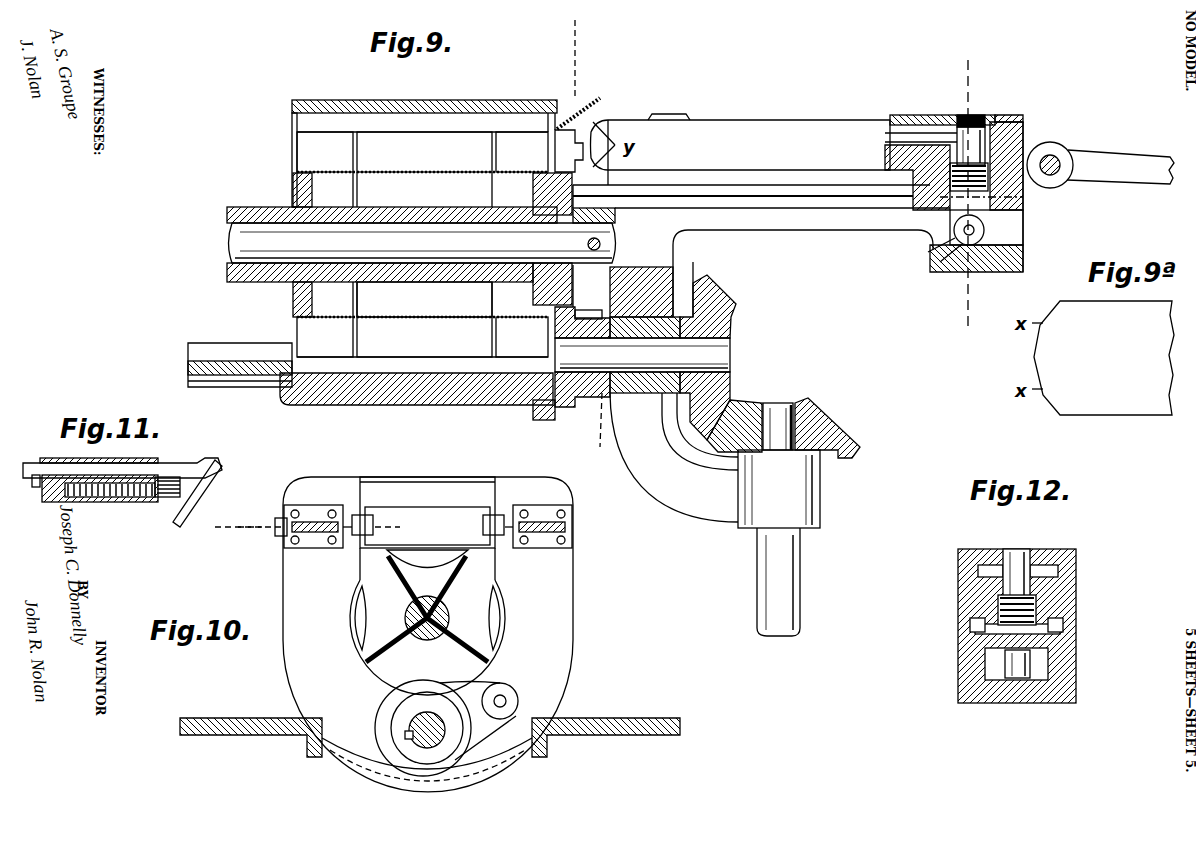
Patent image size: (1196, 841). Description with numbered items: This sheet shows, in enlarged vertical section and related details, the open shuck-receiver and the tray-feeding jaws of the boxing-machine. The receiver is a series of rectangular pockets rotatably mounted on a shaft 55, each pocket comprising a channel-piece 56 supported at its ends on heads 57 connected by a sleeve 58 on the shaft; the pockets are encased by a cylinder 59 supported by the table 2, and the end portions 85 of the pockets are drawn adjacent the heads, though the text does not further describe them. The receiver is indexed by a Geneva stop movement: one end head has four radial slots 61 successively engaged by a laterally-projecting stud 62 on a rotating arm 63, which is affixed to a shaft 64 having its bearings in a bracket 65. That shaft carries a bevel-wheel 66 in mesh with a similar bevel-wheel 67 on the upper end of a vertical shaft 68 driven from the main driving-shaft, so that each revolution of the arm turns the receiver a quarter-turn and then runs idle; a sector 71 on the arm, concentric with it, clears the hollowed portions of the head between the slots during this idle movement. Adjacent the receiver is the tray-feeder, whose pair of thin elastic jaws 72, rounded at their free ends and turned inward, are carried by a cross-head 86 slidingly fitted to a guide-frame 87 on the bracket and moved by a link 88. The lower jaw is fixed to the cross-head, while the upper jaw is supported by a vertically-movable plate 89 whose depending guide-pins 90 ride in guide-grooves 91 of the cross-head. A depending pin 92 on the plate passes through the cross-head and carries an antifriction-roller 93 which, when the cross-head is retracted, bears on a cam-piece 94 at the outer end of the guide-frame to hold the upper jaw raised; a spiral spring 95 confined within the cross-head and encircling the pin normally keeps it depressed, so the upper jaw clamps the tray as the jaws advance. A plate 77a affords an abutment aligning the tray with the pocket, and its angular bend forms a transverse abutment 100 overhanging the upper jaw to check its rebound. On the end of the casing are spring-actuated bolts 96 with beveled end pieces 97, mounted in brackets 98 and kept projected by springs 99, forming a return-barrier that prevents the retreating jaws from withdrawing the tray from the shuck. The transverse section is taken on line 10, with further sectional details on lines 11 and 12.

In FIG. 9, the table 2 is at (253, 386).
In FIG. 10, the table 2 is at (247, 735).
In FIG. 9, the section line 10 10 is at (588, 244).
In FIG. 10, the section line 11 11 is at (355, 512).
In FIG. 11, the section line 11 11 is at (238, 527).
In FIG. 9, the section line 12 12 is at (967, 192).
In FIG. 9, the shaft 55 is at (226, 244).
In FIG. 10, the shaft 55 is at (450, 617).
In FIG. 9, the channel-piece 56 is at (424, 244).
In FIG. 9, the heads 57 is at (292, 311).
In FIG. 9, the sleeve 58 is at (426, 282).
In FIG. 9, the cylinder 59 is at (345, 100).
In FIG. 10, the radial slots 61 is at (427, 608).
In FIG. 10, the stud 62 is at (505, 696).
In FIG. 9, the rotating arm 63 is at (590, 395).
In FIG. 10, the rotating arm 63 is at (480, 722).
In FIG. 9, the shaft 64 is at (722, 353).
In FIG. 10, the shaft 64 is at (410, 721).
In FIG. 9, the bracket 65 is at (700, 254).
In FIG. 9, the bevel-wheel 66 is at (737, 308).
In FIG. 9, the bevel-wheel 67 is at (835, 418).
In FIG. 9, the vertical shaft 68 is at (800, 580).
In FIG. 9, the sector 71 is at (562, 408).
In FIG. 10, the sector 71 is at (392, 740).
In FIG. 9, the tray holding and releasing jaws 72 is at (803, 123).
In FIG. 9A, the tray holding and releasing jaws 72 is at (1112, 415).
In FIG. 9, the plate 77a is at (826, 128).
In FIG. 9, the end plates 85 is at (356, 151).
In FIG. 9, the cross-head 86 is at (1010, 195).
In FIG. 12, the cross-head 86 is at (1068, 663).
In FIG. 9, the guide-frame 87 is at (853, 222).
In FIG. 9, the link 88 is at (1112, 158).
In FIG. 9, the vertically-movable plate 89 is at (930, 115).
In FIG. 12, the vertically-movable plate 89 is at (972, 555).
In FIG. 9, the guide-pins 90 is at (921, 133).
In FIG. 12, the guide-pins 90 is at (958, 585).
In FIG. 12, the guide-grooves 91 is at (968, 620).
In FIG. 9, the pin 92 is at (985, 118).
In FIG. 12, the pin 92 is at (1040, 555).
In FIG. 9, the antifriction-roller 93 is at (955, 240).
In FIG. 12, the antifriction-roller 93 is at (1016, 680).
In FIG. 9, the cam-piece 94 is at (950, 272).
In FIG. 9, the spiral spring 95 is at (1023, 135).
In FIG. 12, the spiral spring 95 is at (1062, 600).
In FIG. 10, the spring-actuated bolts 96 is at (362, 515).
In FIG. 11, the spring-actuated bolts 96 is at (208, 458).
In FIG. 9, the beveled end pieces 97 is at (554, 151).
In FIG. 11, the beveled end pieces 97 is at (210, 482).
In FIG. 9, the brackets 98 is at (533, 185).
In FIG. 10, the brackets 98 is at (318, 548).
In FIG. 11, the brackets 98 is at (95, 503).
In FIG. 11, the springs 99 is at (142, 498).
In FIG. 9, the transverse abutment 100 is at (692, 112).